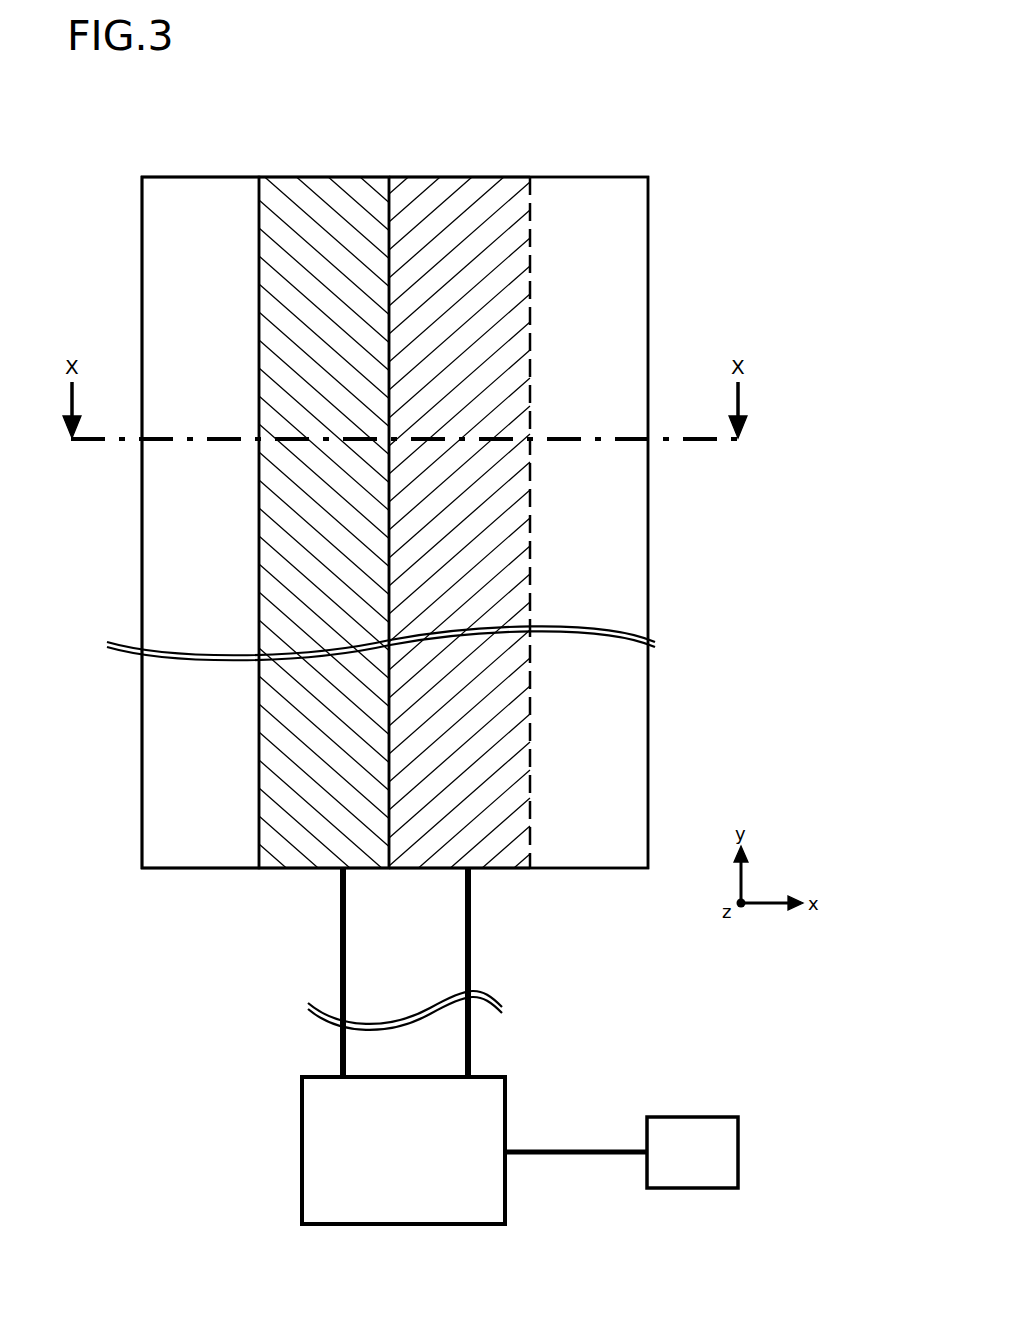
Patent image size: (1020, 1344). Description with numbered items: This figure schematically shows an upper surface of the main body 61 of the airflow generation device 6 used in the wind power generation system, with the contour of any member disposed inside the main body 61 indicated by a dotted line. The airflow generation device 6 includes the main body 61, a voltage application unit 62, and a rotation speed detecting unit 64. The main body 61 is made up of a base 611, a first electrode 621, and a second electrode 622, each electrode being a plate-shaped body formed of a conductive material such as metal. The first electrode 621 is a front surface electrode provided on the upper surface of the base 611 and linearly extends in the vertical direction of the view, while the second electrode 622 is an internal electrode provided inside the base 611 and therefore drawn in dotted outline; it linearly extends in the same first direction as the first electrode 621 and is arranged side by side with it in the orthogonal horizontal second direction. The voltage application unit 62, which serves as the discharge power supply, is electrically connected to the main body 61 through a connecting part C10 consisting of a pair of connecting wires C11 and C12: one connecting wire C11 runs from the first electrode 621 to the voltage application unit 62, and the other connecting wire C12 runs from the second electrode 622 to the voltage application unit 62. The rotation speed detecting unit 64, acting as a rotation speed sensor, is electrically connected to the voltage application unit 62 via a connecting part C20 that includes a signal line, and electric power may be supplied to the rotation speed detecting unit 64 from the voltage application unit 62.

The airflow generation device 6 is at (450, 51).
The main body 61 is at (517, 125).
The base 611 is at (198, 190).
The first electrode 621 is at (310, 188).
The second electrode 622 is at (468, 190).
The voltage application unit 62 is at (304, 1150).
The rotation speed detecting unit 64 is at (693, 1117).
The connecting part C10 is at (268, 904).
The connecting wire C11 is at (340, 948).
The connecting wire C12 is at (465, 920).
The connecting part C20 is at (580, 1150).